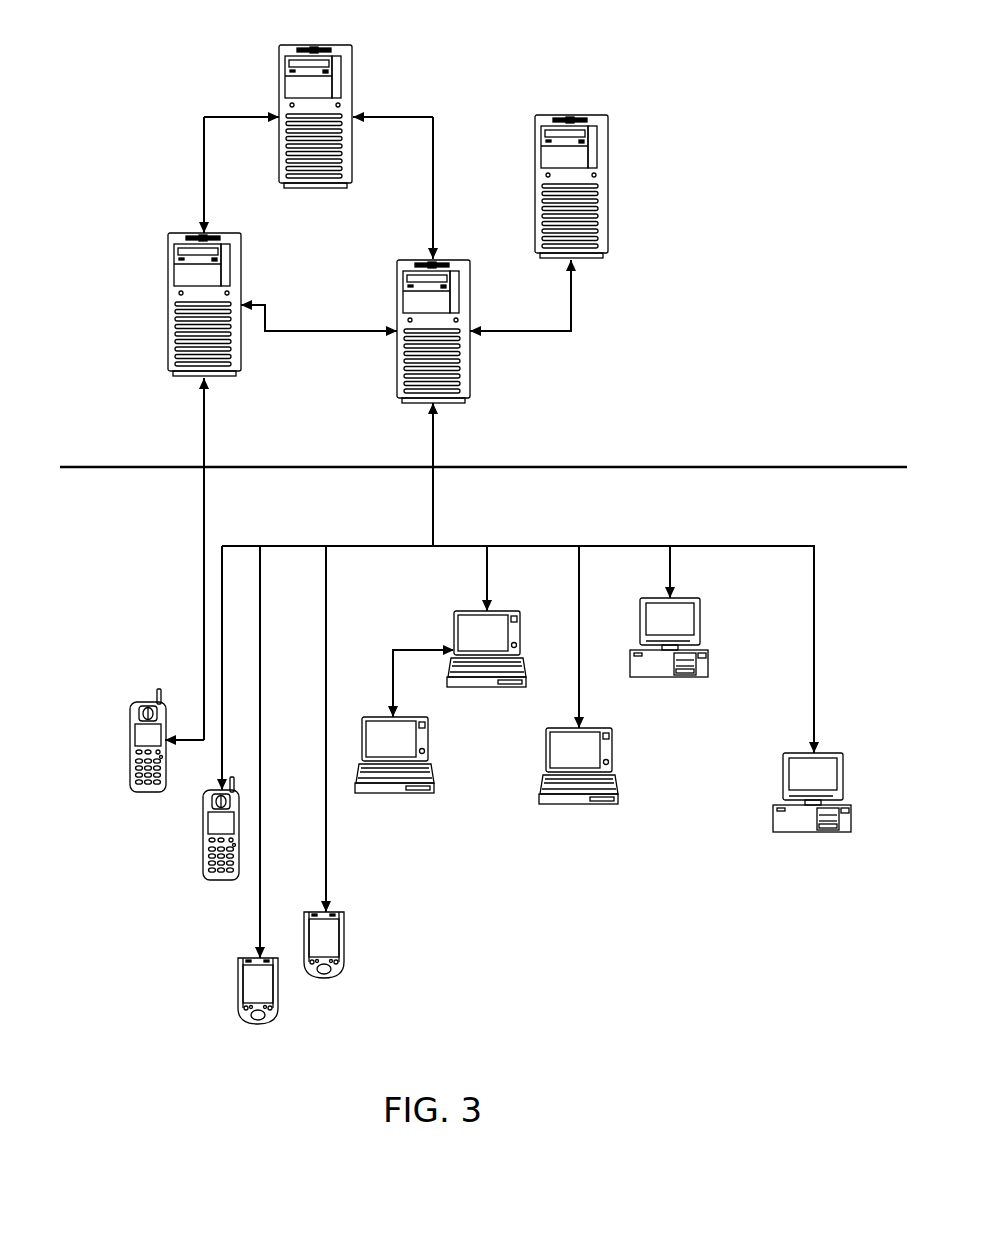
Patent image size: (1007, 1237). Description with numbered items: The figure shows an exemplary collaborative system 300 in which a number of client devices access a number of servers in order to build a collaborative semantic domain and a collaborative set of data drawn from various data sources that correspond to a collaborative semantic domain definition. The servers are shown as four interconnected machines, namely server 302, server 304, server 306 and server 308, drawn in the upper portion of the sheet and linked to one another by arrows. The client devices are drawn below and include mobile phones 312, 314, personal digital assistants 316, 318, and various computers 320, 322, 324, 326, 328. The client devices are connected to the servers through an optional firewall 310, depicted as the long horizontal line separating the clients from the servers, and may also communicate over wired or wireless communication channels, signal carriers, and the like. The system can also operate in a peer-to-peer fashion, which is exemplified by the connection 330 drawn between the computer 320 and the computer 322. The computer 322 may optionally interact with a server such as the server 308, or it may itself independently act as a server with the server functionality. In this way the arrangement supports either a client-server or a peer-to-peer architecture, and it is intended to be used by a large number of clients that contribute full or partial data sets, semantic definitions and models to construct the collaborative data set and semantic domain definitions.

The system 300 is at (815, 200).
The server 302 is at (352, 98).
The server 304 is at (610, 168).
The server 306 is at (140, 286).
The server 308 is at (504, 331).
The firewall 310 is at (483, 428).
The mobile phone 312 is at (103, 722).
The mobile phone 314 is at (158, 828).
The personal digital assistant 316 is at (191, 989).
The personal digital assistant 318 is at (383, 934).
The computer 320 is at (388, 697).
The computer 322 is at (508, 623).
The computer 324 is at (600, 800).
The computer 326 is at (692, 672).
The computer 328 is at (806, 836).
The connection 330 is at (452, 700).